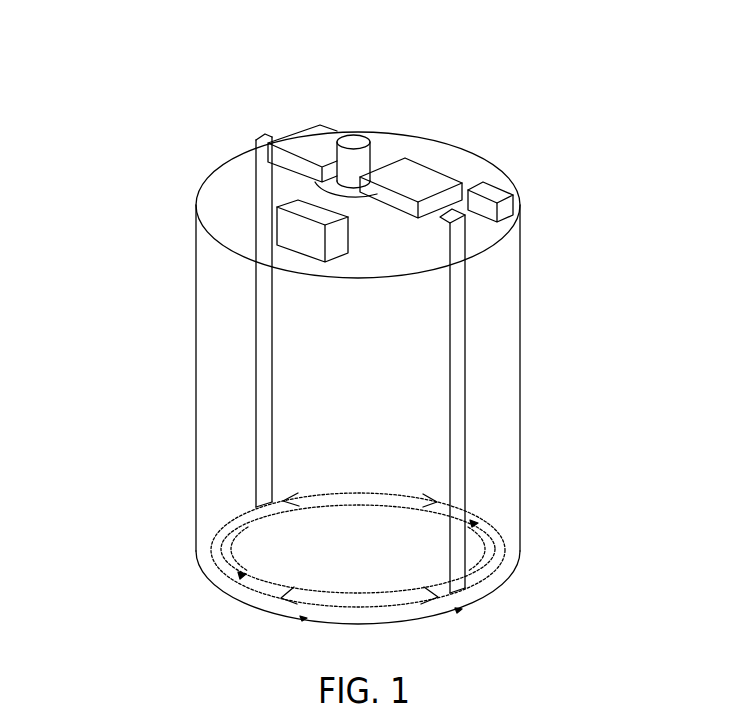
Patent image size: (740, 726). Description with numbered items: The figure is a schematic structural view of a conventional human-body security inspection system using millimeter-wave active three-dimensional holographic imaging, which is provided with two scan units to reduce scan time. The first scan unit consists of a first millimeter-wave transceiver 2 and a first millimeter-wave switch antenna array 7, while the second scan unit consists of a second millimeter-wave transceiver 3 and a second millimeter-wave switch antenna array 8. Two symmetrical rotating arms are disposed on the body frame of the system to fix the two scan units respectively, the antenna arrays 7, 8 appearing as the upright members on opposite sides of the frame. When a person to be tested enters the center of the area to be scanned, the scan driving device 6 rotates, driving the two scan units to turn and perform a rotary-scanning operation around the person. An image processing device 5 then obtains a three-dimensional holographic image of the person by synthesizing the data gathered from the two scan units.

The first millimeter-wave transceiver 2 is at (297, 133).
The second millimeter-wave transceiver 3 is at (402, 172).
The image processing device 5 is at (297, 223).
The scan driving device 6 is at (353, 137).
The first millimeter-wave switch antenna array 7 is at (260, 403).
The second millimeter-wave switch antenna array 8 is at (457, 408).